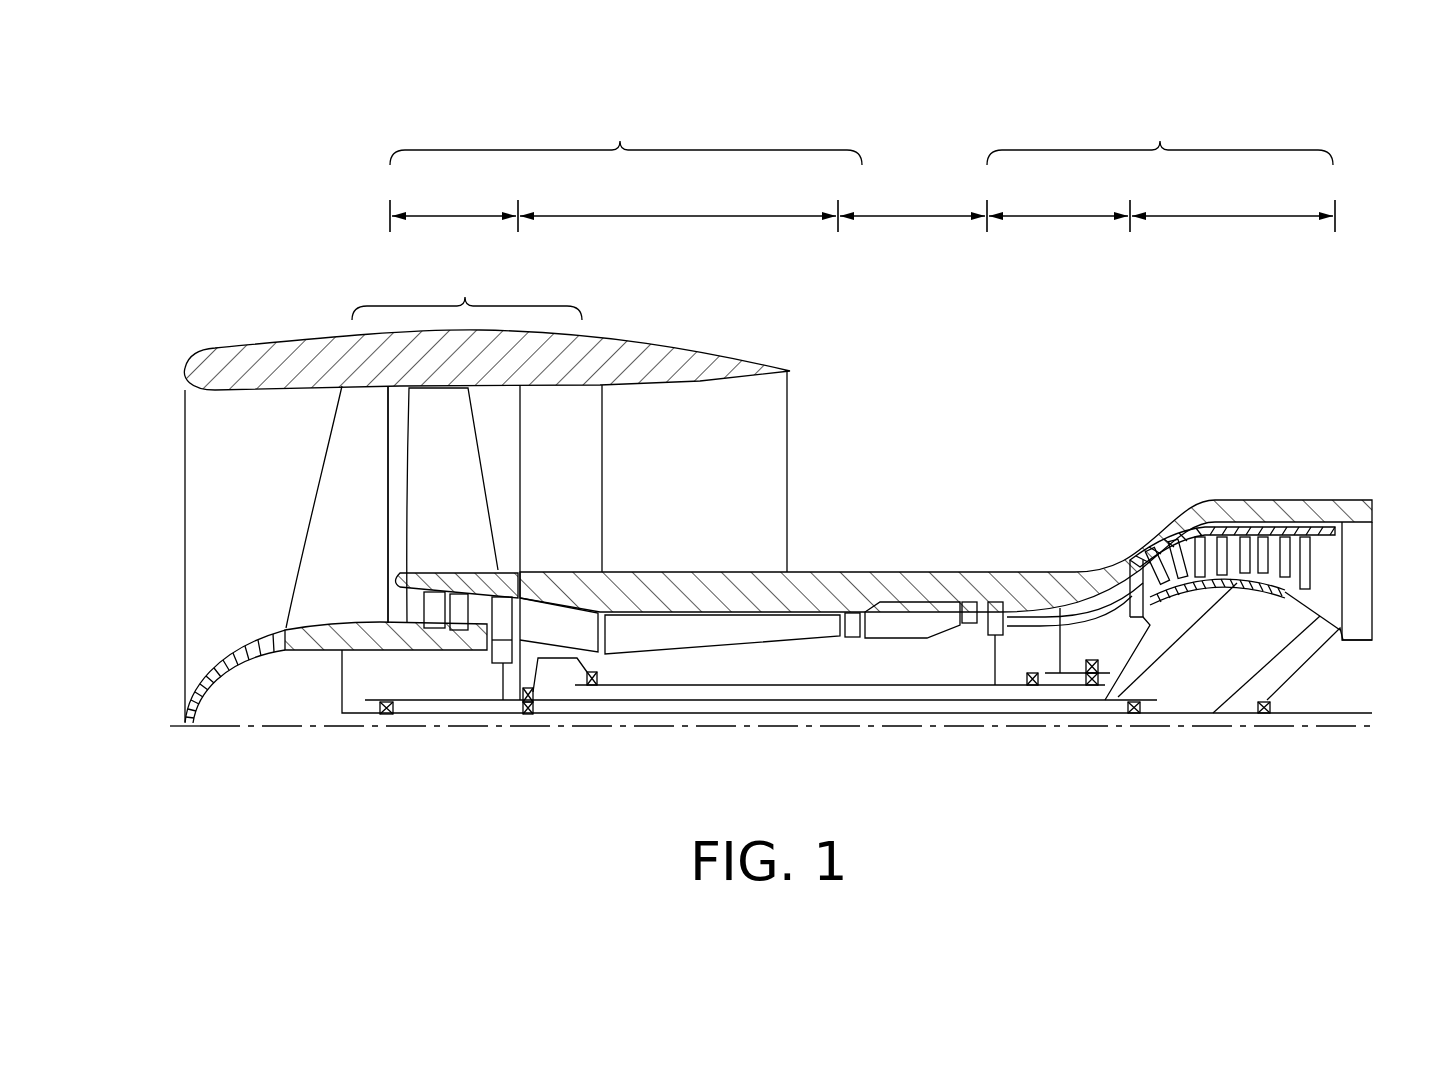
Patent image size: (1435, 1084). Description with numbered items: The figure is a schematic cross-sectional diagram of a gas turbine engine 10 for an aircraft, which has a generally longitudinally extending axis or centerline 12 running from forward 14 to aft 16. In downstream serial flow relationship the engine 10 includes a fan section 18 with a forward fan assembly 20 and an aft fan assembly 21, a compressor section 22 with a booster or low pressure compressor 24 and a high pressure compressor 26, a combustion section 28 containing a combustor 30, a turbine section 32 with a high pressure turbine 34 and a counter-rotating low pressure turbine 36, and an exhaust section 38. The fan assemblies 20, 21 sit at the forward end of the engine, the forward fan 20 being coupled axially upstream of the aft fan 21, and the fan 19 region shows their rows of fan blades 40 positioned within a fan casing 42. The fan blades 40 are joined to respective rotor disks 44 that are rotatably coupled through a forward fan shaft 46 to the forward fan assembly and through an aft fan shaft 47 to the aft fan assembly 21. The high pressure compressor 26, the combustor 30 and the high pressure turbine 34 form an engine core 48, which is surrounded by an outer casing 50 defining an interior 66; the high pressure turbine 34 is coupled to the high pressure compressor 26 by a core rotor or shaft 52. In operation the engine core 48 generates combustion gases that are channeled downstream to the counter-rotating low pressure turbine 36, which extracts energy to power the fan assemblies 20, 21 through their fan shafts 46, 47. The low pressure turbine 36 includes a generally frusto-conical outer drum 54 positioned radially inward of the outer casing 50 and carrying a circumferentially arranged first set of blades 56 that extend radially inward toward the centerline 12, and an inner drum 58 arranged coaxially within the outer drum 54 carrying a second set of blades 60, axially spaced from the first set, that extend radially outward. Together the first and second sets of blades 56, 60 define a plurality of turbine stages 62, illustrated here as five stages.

The gas turbine engine 10 is at (769, 455).
The centerline 12 is at (205, 732).
The forward 14 is at (176, 657).
The aft 16 is at (1376, 680).
The fan section 18 is at (470, 298).
The fan 19 is at (356, 527).
The forward fan assembly 20 is at (313, 465).
The aft fan assembly 21 is at (487, 478).
The compressor section 22 is at (623, 142).
The low pressure compressor 24 is at (440, 216).
The high pressure compressor 26 is at (663, 216).
The combustion section 28 is at (898, 216).
The combustor 30 is at (925, 632).
The turbine section 32 is at (1162, 142).
The high pressure turbine 34 is at (1048, 216).
The counter-rotating low pressure turbine 36 is at (1205, 216).
The exhaust section 38 is at (1387, 506).
The fan blades 40 is at (456, 487).
The fan casing 42 is at (680, 348).
The rotor disks 44 is at (440, 562).
The forward fan shaft 46 is at (413, 703).
The aft fan shaft 47 is at (557, 695).
The engine core 48 is at (826, 652).
The core shaft 52 is at (887, 687).
The outer casing 50 is at (1115, 545).
The outer drum 54 is at (1212, 525).
The first set of blades 56 is at (1240, 540).
The inner drum 58 is at (1250, 587).
The second set of blades 60 is at (1160, 585).
The turbine stages 62 is at (1138, 510).
The interior 66 is at (1213, 680).